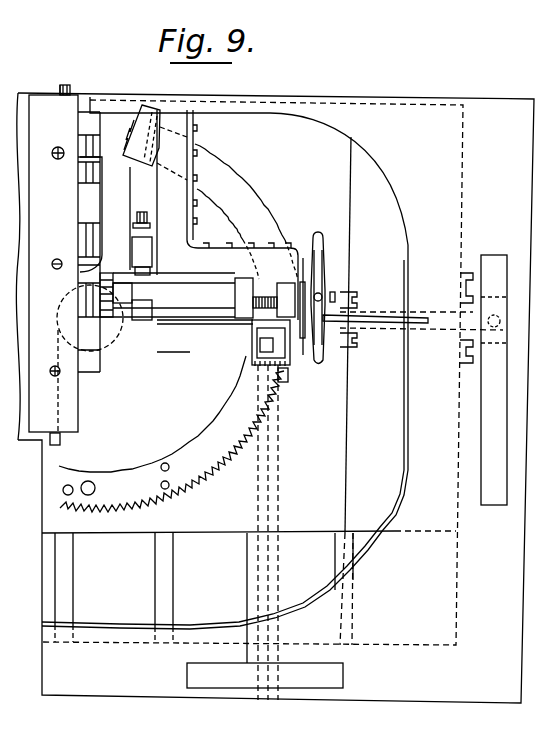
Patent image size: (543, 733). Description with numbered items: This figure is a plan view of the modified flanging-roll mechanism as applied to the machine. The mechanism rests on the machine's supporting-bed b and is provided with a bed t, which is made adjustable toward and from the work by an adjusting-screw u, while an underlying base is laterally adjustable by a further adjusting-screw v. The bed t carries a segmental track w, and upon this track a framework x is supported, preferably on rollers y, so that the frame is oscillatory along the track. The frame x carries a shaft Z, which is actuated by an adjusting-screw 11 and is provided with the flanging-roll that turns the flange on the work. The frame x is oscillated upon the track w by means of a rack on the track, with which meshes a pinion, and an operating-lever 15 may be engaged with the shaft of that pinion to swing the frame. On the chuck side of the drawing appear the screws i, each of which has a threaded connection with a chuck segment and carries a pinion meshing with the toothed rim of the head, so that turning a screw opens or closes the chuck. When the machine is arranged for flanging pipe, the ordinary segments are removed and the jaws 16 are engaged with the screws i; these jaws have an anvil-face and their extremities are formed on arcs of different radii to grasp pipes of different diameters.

The screw i is at (66, 452).
The rollers y is at (132, 127).
The framework x is at (205, 336).
The shaft Z is at (210, 298).
The adjusting-screw 11 is at (260, 289).
The jaws 16 is at (112, 318).
The operating-lever 15 is at (383, 322).
The adjusting-screw u is at (502, 312).
The segmental track w is at (172, 328).
The bed t is at (225, 363).
The supporting-bed b is at (257, 372).
The adjusting-screw v is at (270, 655).